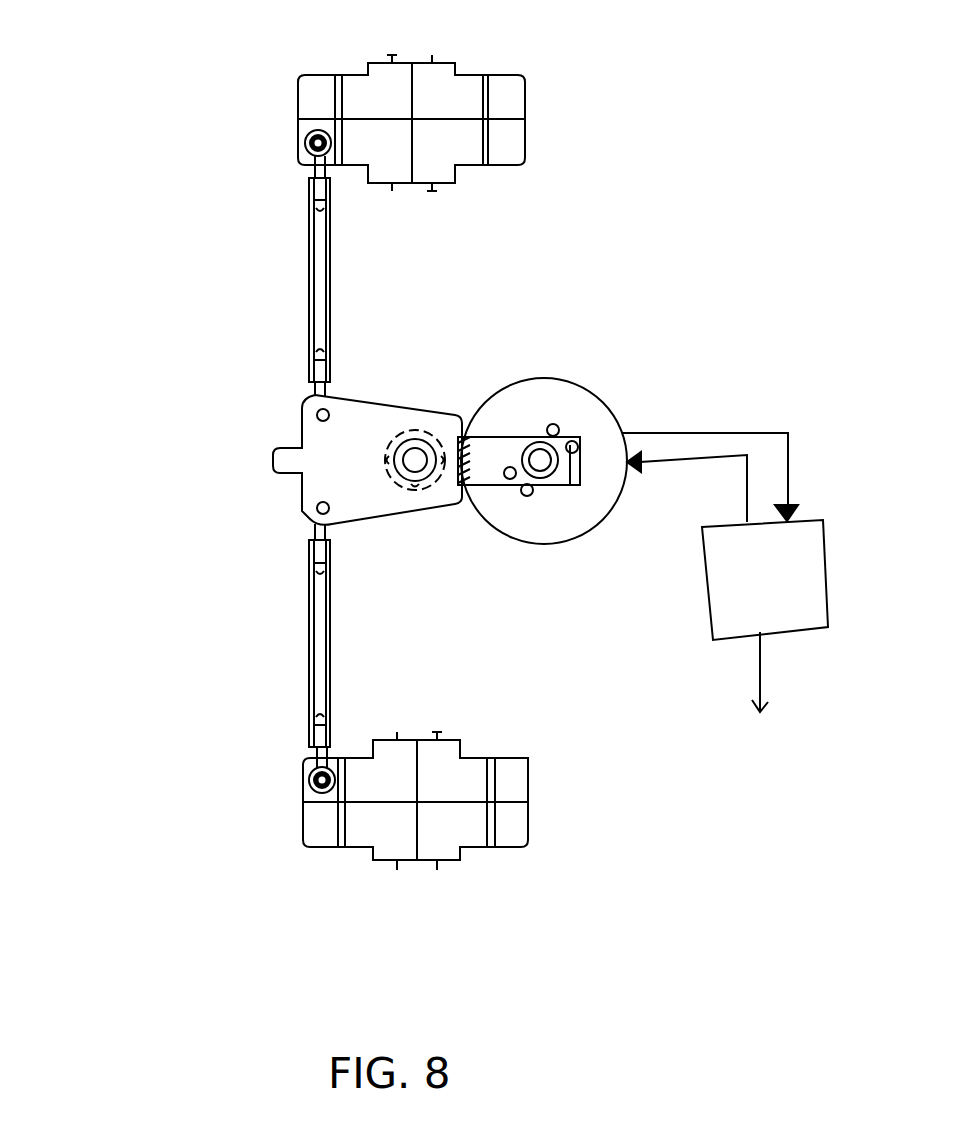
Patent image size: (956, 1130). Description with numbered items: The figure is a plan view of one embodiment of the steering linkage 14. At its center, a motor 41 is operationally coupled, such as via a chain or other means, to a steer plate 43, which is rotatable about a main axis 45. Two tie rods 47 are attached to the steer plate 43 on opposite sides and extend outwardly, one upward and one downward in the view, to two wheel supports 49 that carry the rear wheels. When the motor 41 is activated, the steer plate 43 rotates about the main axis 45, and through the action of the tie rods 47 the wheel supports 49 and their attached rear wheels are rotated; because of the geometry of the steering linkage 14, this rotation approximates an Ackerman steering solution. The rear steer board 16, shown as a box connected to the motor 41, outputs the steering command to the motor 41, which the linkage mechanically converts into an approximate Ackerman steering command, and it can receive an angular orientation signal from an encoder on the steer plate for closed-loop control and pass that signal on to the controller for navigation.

The steering linkage 14 is at (177, 68).
The rear steer board 16 is at (702, 580).
The motor 41 is at (577, 383).
The steer plate 43 is at (370, 415).
The main axis 45 is at (415, 460).
The tie rods 47 is at (322, 292).
The wheel supports 49 is at (318, 92).